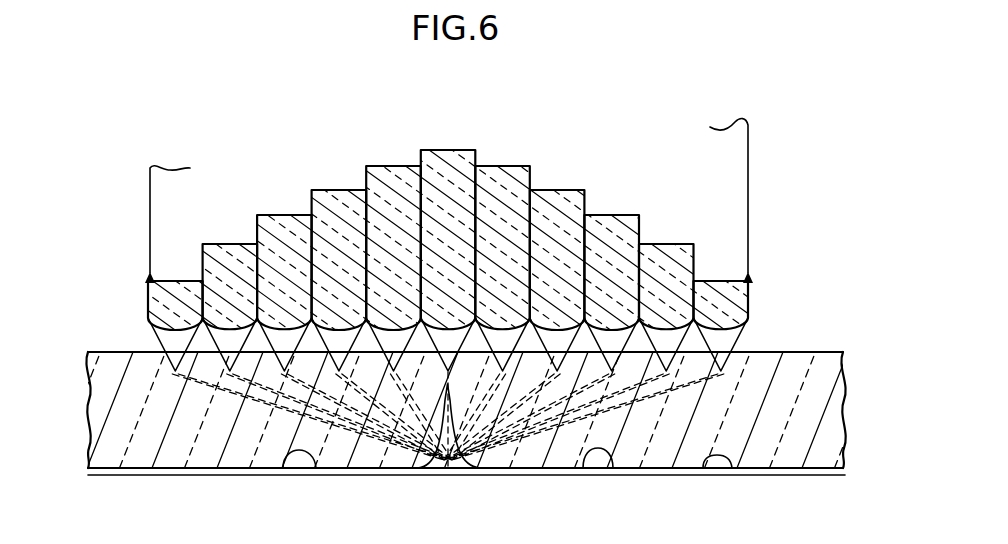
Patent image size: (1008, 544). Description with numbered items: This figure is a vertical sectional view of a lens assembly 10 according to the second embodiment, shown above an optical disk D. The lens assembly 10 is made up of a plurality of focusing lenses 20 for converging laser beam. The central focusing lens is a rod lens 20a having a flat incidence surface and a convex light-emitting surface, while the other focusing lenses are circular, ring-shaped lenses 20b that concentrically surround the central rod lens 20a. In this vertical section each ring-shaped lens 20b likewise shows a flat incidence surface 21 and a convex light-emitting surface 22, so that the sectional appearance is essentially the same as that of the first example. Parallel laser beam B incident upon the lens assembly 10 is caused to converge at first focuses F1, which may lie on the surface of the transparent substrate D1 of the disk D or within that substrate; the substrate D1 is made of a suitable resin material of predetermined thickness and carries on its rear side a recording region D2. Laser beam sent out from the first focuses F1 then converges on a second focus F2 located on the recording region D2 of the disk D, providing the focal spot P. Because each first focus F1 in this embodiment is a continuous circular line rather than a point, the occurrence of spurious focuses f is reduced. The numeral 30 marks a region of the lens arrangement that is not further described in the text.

The lens assembly 10 is at (458, 272).
The focusing lenses 20 is at (450, 272).
The rod lens 20a is at (457, 150).
The ring-shaped lenses 20b is at (507, 166).
The incidence surface 21 is at (603, 215).
The light-emitting surface 22 is at (743, 347).
The lens array 30 is at (343, 168).
The laser beam B is at (750, 188).
The optical disk D is at (467, 404).
The transparent substrate D1 is at (845, 400).
The recording region D2 is at (728, 473).
The first focuses F1 is at (760, 393).
The second focus F2 is at (448, 471).
The spurious focuses f is at (284, 460).